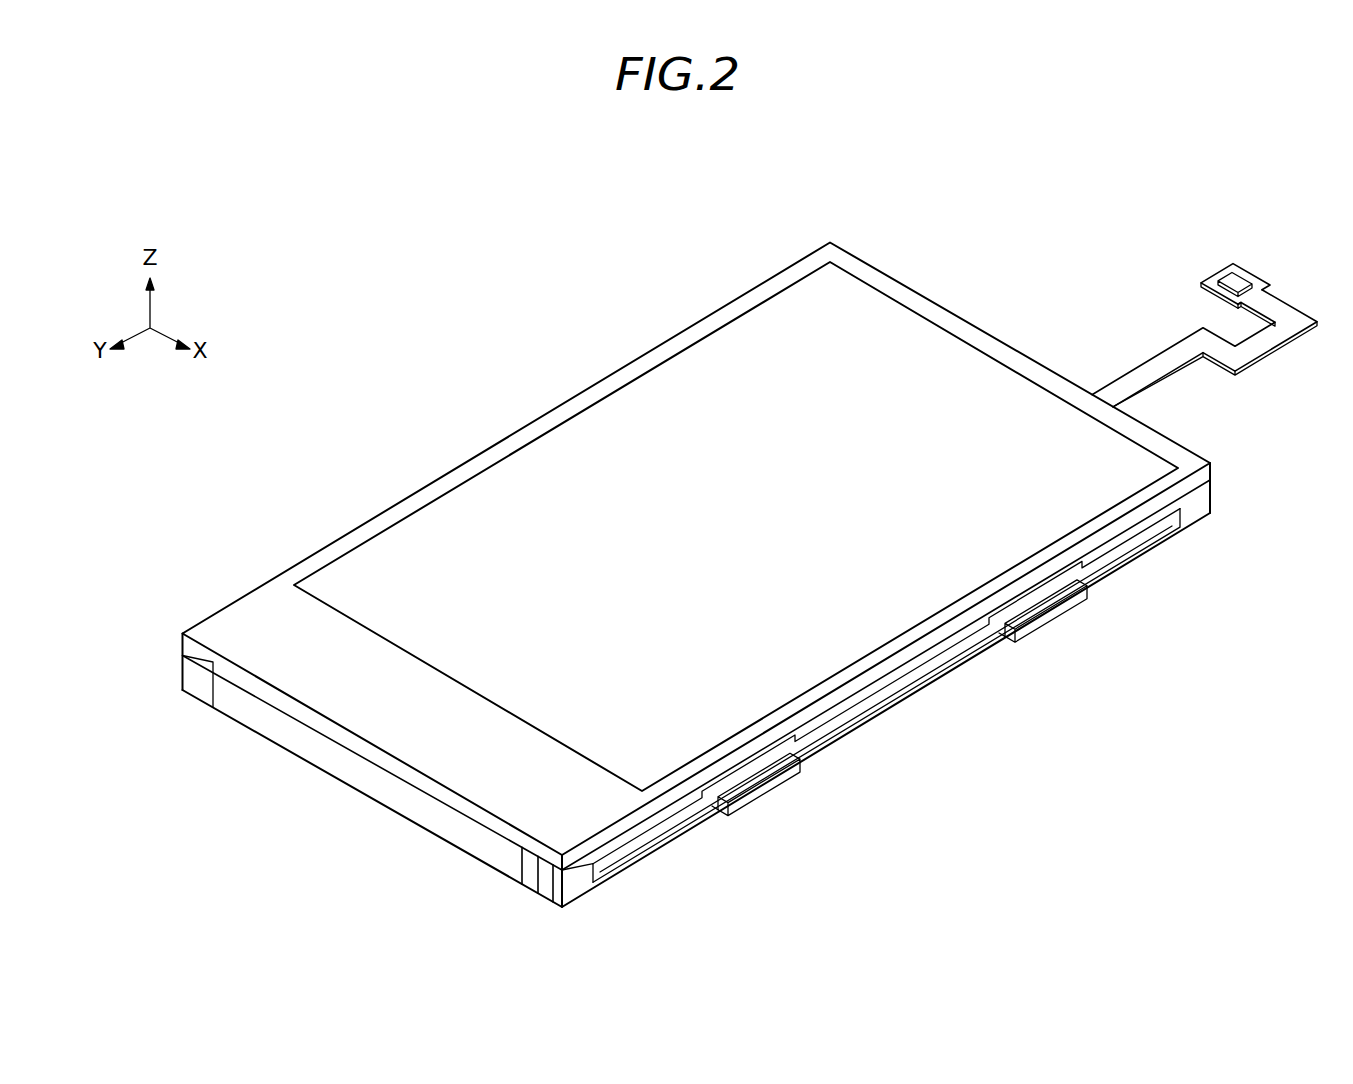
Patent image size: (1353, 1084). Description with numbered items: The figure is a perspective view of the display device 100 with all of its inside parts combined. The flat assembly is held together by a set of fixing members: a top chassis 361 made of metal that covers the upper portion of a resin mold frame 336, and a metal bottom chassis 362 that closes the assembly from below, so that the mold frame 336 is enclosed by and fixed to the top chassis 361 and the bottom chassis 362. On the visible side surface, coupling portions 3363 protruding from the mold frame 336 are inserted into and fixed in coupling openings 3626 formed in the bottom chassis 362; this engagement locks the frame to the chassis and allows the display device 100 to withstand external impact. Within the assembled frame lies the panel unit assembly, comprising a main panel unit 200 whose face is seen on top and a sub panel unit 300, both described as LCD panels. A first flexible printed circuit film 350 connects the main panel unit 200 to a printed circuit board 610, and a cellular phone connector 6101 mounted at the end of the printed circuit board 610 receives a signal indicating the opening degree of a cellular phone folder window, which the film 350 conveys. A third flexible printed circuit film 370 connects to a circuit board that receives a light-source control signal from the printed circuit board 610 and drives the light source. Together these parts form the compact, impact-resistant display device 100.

The display device 100 is at (531, 232).
The main panel unit 200 is at (438, 530).
The sub panel unit 300 is at (847, 745).
The mold frame 336 is at (178, 683).
The first flexible printed circuit film 350 is at (402, 805).
The top chassis 361 is at (262, 588).
The bottom chassis 362 is at (1130, 555).
The third flexible printed circuit film 370 is at (535, 888).
The printed circuit board 610 is at (898, 710).
The coupling portions 3363 is at (755, 790).
The coupling openings 3626 is at (718, 808).
The cellular phone connector 6101 is at (1238, 278).